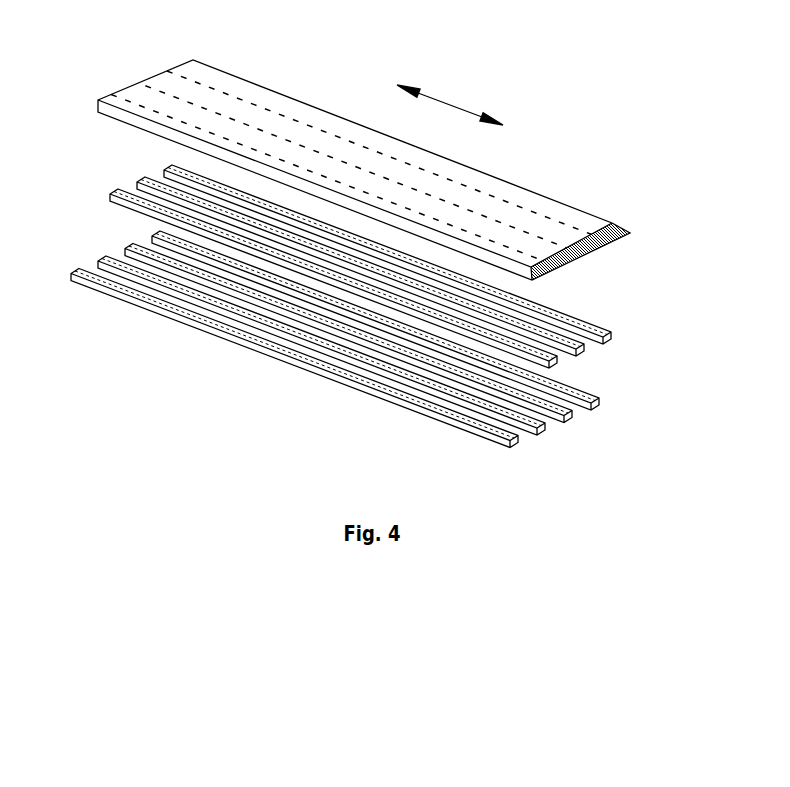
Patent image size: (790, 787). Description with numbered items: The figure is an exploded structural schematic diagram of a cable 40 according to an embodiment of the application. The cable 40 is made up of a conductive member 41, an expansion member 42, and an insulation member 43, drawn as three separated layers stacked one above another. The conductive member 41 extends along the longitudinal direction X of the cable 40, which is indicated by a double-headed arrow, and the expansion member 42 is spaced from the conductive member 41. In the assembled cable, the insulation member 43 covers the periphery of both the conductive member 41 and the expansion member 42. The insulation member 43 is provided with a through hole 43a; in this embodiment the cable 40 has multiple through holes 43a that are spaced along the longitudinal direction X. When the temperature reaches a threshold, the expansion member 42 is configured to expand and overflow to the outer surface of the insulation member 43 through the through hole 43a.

The cable 40 is at (404, 27).
The conductive member 41 is at (599, 400).
The expansion member 42 is at (611, 332).
The insulation member 43 is at (612, 223).
The through hole 43a is at (502, 196).